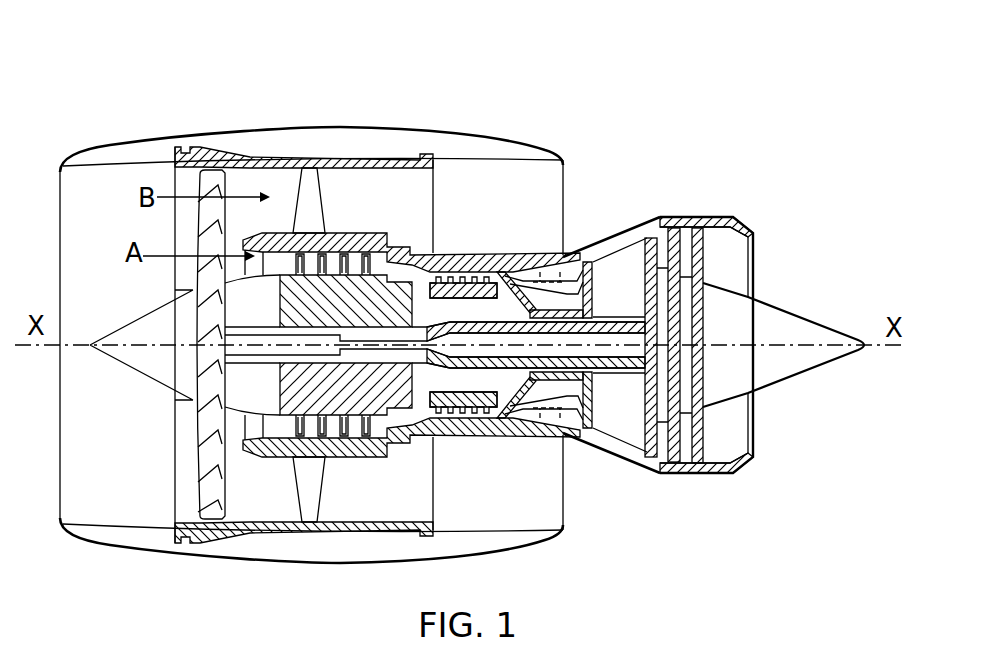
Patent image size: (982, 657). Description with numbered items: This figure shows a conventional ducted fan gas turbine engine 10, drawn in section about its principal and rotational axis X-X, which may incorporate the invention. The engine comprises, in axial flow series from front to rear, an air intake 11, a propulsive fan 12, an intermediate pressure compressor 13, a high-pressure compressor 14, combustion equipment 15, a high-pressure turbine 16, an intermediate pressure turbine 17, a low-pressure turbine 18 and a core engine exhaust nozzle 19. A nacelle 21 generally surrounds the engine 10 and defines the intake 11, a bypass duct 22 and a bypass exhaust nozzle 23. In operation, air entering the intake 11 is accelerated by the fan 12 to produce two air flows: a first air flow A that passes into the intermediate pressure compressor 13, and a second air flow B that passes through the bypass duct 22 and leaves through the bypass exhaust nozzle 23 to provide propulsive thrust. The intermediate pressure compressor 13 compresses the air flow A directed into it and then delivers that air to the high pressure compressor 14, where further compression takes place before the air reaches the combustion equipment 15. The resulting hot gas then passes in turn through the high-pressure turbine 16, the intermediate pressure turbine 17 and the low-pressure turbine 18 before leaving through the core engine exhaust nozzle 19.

The ducted fan gas turbine engine 10 is at (106, 86).
The air intake 11 is at (115, 162).
The propulsive fan 12 is at (200, 478).
The intermediate pressure compressor 13 is at (350, 433).
The high-pressure compressor 14 is at (473, 265).
The combustion equipment 15 is at (530, 417).
The high-pressure turbine 16 is at (587, 437).
The intermediate pressure turbine 17 is at (622, 243).
The low-pressure turbine 18 is at (658, 467).
The core engine exhaust nozzle 19 is at (738, 218).
The nacelle 21 is at (354, 140).
The bypass duct 22 is at (517, 205).
The bypass exhaust nozzle 23 is at (565, 157).